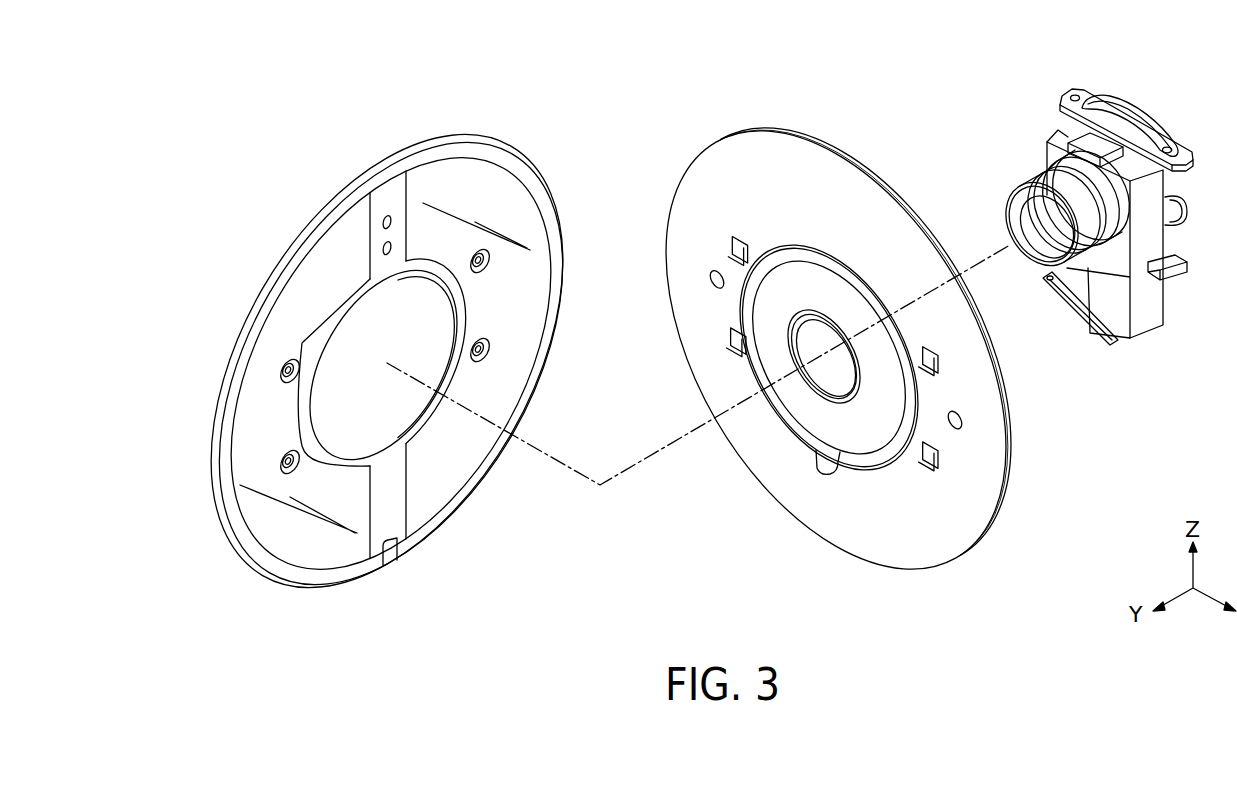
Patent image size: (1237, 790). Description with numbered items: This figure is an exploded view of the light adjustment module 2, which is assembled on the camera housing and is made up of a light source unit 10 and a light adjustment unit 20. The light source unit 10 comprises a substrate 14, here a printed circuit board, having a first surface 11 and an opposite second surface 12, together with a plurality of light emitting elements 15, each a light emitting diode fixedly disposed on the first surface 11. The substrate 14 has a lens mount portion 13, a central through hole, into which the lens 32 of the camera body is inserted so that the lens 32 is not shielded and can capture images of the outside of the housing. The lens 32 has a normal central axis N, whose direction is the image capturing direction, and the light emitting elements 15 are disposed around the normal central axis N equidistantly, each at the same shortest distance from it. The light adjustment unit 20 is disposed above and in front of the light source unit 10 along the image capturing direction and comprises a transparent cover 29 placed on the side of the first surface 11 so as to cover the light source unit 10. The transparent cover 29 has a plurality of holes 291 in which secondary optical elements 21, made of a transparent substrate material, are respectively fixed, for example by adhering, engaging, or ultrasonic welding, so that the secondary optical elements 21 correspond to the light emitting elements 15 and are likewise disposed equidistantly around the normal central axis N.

The light adjustment module 2 is at (296, 156).
The light adjustment unit 20 is at (269, 252).
The transparent cover 29 is at (455, 470).
The holes 291 is at (283, 364).
The secondary optical elements 21 is at (276, 369).
The light source unit 10 is at (790, 114).
The first surface 11 is at (700, 190).
The second surface 12 is at (1005, 420).
The lens mount portion 13 is at (797, 344).
The substrate 14 is at (848, 150).
The light emitting elements 15 is at (742, 252).
The lens 32 is at (1040, 215).
The normal central axis N is at (665, 460).